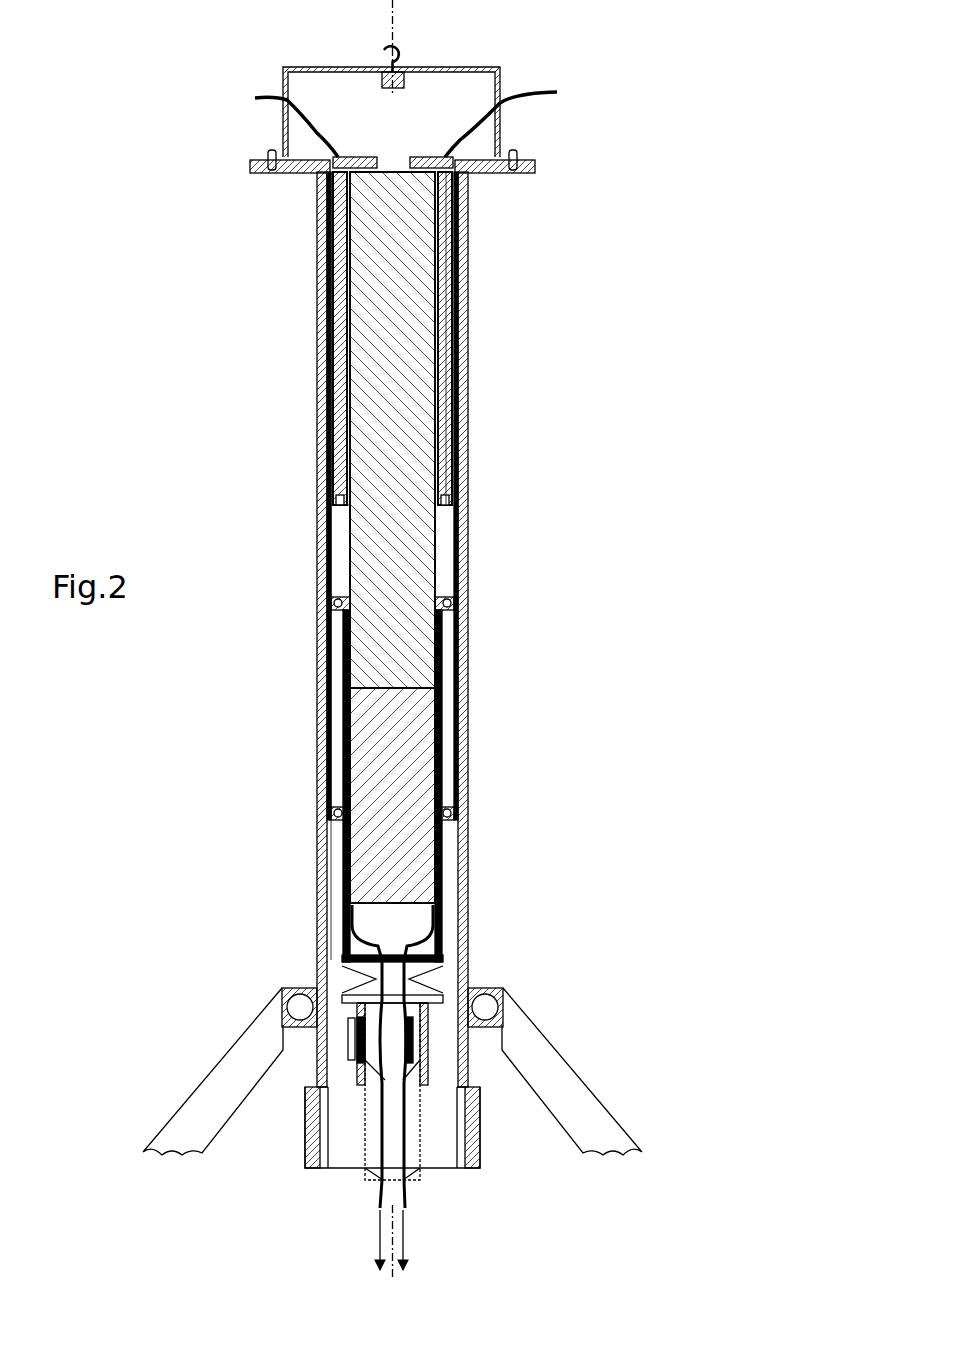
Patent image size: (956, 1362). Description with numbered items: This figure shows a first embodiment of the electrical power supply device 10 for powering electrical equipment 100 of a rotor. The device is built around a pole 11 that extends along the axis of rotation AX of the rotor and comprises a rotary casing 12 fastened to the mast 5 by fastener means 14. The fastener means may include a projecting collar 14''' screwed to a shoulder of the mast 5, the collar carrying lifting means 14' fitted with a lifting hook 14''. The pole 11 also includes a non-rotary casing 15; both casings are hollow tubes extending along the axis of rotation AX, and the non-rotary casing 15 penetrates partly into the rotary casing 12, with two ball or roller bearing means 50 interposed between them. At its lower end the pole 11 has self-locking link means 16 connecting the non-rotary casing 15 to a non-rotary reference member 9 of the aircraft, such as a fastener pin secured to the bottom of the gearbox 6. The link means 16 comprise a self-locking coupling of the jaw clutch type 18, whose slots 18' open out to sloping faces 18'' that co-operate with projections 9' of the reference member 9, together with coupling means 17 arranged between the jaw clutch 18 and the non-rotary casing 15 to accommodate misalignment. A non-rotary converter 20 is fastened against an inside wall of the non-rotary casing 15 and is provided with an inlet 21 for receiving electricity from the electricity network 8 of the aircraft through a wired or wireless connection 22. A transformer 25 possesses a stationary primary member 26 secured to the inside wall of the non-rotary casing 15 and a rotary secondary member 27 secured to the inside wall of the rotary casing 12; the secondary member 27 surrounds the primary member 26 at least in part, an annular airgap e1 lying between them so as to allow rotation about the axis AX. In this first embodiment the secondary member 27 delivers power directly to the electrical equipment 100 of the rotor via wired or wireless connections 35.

The lifting hook 14'' is at (425, 47).
The lifting means 14' is at (432, 82).
The electrical equipment 100 is at (250, 98).
The fastener means 14 is at (391, 143).
The wired or wireless connections 35 is at (463, 125).
The projecting collar 14''' is at (558, 146).
The device 10 is at (582, 268).
The rotary secondary member 27 is at (448, 358).
The rotary casing 12 is at (325, 455).
The pole 11 is at (302, 512).
The annular airgap e1 is at (346, 510).
The transformer 25 is at (439, 560).
The stationary primary member 26 is at (360, 575).
The ball or roller bearing means 50 is at (449, 602).
The mast 5 is at (468, 645).
The non-rotary converter 20 is at (445, 847).
The non-rotary casing 15 is at (342, 883).
The self-locking link means 16 is at (502, 960).
The coupling means 17 is at (444, 980).
The inlet 21 is at (422, 912).
The slots 18' is at (420, 996).
The gearbox 6 is at (192, 1048).
The jaw clutch 18 is at (471, 1044).
The projections 9' is at (381, 1091).
The sloping faces 18'' is at (444, 1084).
The non-rotary reference member 9 is at (392, 1144).
The wired or wireless connection 22 is at (412, 1197).
The axis of rotation AX is at (395, 1240).
The electricity network 8 is at (400, 1302).